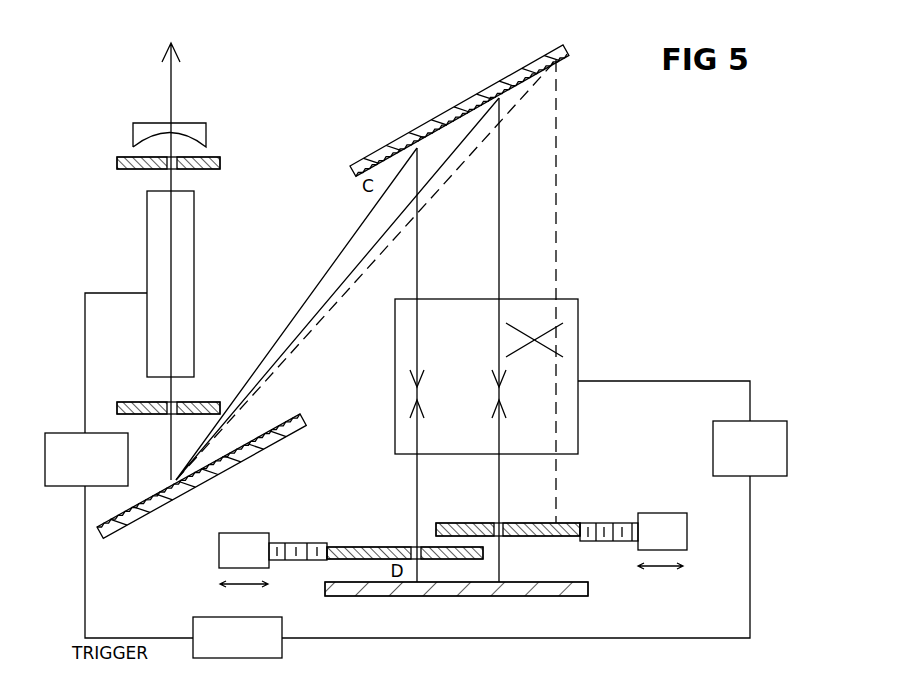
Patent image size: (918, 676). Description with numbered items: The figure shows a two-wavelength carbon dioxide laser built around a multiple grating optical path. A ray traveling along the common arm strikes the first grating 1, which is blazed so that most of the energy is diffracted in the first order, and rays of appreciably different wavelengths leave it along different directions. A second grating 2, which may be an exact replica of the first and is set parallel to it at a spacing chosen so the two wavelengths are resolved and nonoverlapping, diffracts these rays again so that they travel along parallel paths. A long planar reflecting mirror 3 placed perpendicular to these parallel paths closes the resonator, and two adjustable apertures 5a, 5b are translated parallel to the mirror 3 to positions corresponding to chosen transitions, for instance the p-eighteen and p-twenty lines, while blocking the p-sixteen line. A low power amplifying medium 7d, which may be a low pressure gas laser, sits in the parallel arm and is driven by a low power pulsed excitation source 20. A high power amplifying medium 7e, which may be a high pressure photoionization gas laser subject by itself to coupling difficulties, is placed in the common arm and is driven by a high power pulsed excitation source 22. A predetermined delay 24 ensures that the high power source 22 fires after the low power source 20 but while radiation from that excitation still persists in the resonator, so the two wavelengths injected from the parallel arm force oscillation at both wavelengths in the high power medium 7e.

The grating 1 is at (283, 415).
The second grating 2 is at (565, 57).
The long planar reflecting mirror 3 is at (572, 582).
The adjustable aperture 5a is at (372, 547).
The adjustable aperture 5b is at (532, 523).
The amplifying medium 7d is at (578, 305).
The amplifying medium 7e is at (147, 248).
The low power pulsed excitation source 20 is at (777, 421).
The high power pulsed excitation source 22 is at (64, 432).
The predetermined delay 24 is at (193, 618).